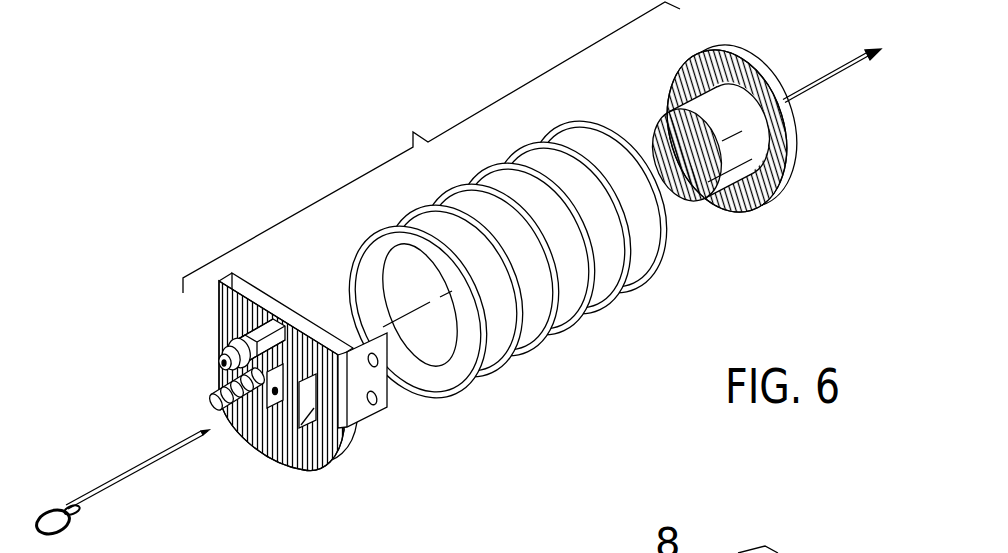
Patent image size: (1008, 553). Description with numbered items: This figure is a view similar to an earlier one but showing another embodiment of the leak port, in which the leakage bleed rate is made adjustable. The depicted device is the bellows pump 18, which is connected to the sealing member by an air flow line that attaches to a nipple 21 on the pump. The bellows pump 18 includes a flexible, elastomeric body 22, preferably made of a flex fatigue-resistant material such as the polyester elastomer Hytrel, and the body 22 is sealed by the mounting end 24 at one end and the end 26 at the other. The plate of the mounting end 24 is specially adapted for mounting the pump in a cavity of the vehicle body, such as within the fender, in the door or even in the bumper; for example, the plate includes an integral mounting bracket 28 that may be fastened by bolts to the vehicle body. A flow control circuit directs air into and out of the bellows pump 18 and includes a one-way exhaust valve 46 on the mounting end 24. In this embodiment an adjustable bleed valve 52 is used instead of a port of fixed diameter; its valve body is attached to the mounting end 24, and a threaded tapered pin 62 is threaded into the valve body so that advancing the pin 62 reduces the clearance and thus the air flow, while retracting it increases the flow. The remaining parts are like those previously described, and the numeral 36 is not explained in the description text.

The bellows pump 18 is at (508, 266).
The nipple 21 is at (208, 401).
The body 22 is at (615, 305).
The mounting end 24 is at (310, 470).
The end 26 is at (741, 62).
The mounting bracket 28 is at (372, 378).
The pin 36 is at (823, 78).
The one-way exhaust valve 46 is at (281, 472).
The adjustable bleed valve 52 is at (262, 321).
The threaded tapered pin 62 is at (227, 367).